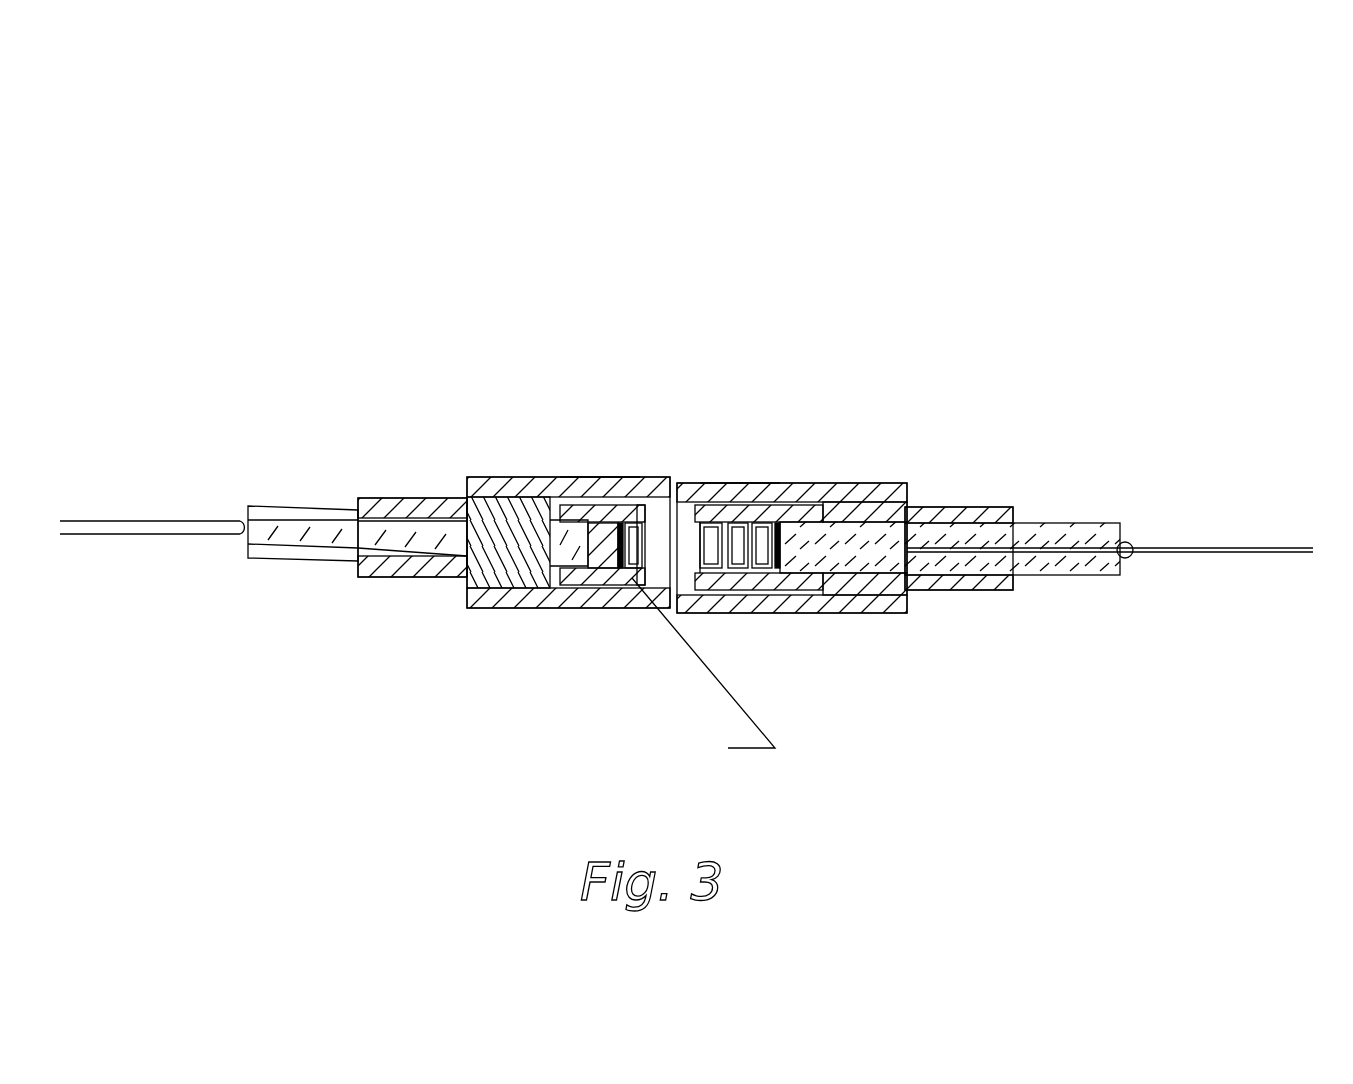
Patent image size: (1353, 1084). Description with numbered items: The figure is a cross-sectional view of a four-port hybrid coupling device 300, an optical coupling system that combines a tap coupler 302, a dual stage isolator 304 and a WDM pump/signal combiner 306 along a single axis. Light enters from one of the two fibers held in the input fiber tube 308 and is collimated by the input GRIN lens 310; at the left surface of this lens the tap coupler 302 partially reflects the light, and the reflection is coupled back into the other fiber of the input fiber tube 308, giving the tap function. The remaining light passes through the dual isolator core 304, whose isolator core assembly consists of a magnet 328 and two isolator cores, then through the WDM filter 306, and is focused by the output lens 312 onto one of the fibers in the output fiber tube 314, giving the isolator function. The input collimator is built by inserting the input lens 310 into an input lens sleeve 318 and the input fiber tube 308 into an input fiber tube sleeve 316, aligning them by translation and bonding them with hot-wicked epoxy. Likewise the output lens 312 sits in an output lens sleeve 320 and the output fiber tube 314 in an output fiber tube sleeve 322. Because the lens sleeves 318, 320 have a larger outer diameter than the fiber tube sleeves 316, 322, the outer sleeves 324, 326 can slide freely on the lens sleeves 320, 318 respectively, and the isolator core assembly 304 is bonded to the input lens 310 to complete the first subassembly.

The 4-port hybrid coupling device 300 is at (827, 137).
The tap coupler 302 is at (802, 592).
The dual stage isolator 304 is at (738, 524).
The WDM pump/signal combiner 306 is at (551, 599).
The input fiber tube 308 is at (1109, 509).
The input GRIN lens 310 is at (933, 600).
The output lens 312 is at (474, 514).
The output fiber tube 314 is at (212, 609).
The input fiber tube sleeve 316 is at (1045, 456).
The input lens sleeve 318 is at (900, 447).
The output lens sleeve 320 is at (531, 471).
The output fiber tube sleeve 322 is at (412, 598).
The outer sleeve 324 is at (603, 408).
The outer sleeve 326 is at (665, 411).
The magnet 328 is at (782, 616).